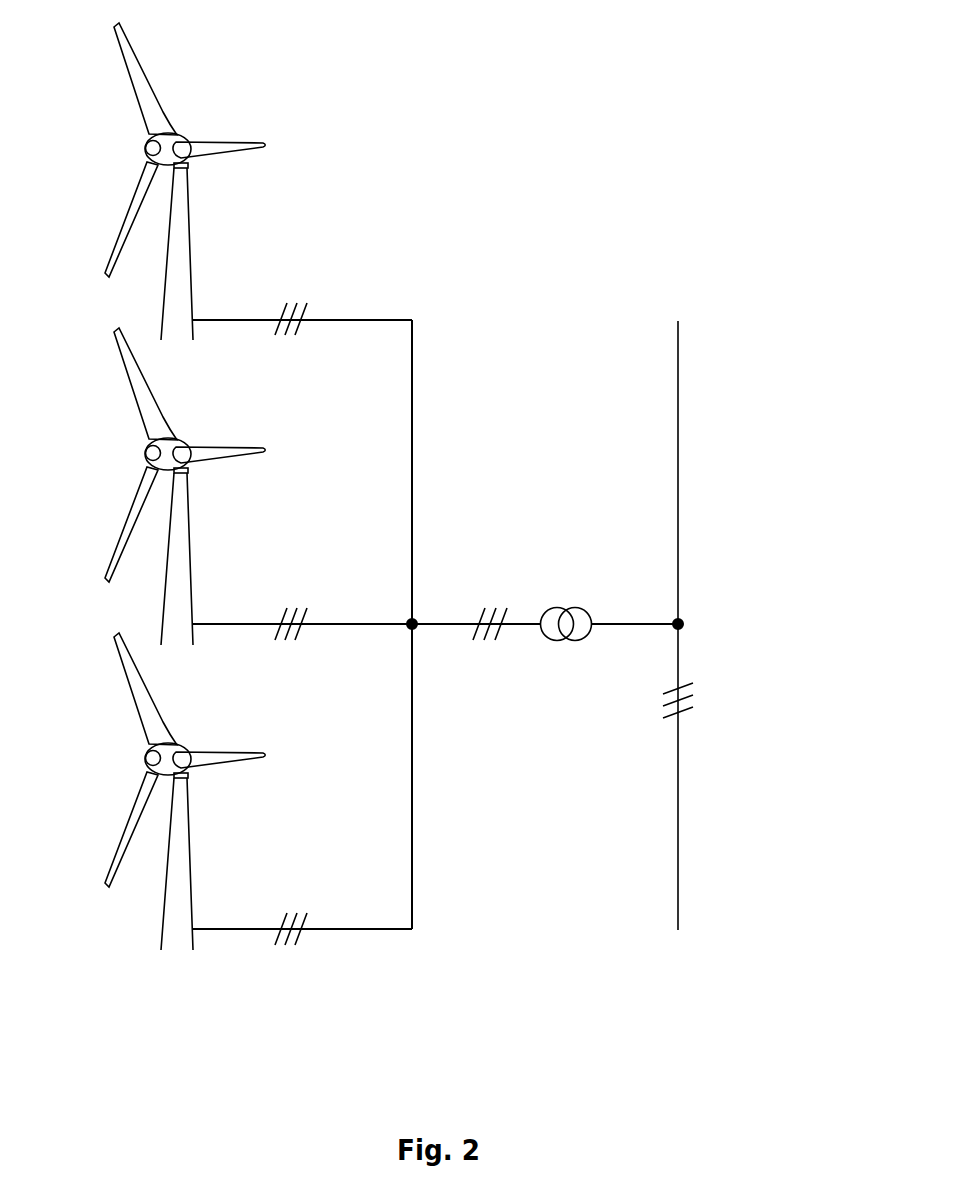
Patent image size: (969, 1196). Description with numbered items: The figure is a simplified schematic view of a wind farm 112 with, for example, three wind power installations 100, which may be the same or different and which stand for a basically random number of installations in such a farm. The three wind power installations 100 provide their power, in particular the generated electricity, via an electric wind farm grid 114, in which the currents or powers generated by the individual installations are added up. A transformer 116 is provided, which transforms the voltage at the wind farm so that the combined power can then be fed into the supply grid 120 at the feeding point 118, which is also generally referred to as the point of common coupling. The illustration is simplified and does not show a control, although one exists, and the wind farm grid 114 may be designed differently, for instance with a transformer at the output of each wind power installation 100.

The wind power installation 100 is at (183, 238).
The wind farm 112 is at (490, 147).
The electric wind farm grid 114 is at (437, 624).
The transformer 116 is at (568, 601).
The feeding point 118 is at (690, 607).
The supply grid 120 is at (678, 357).